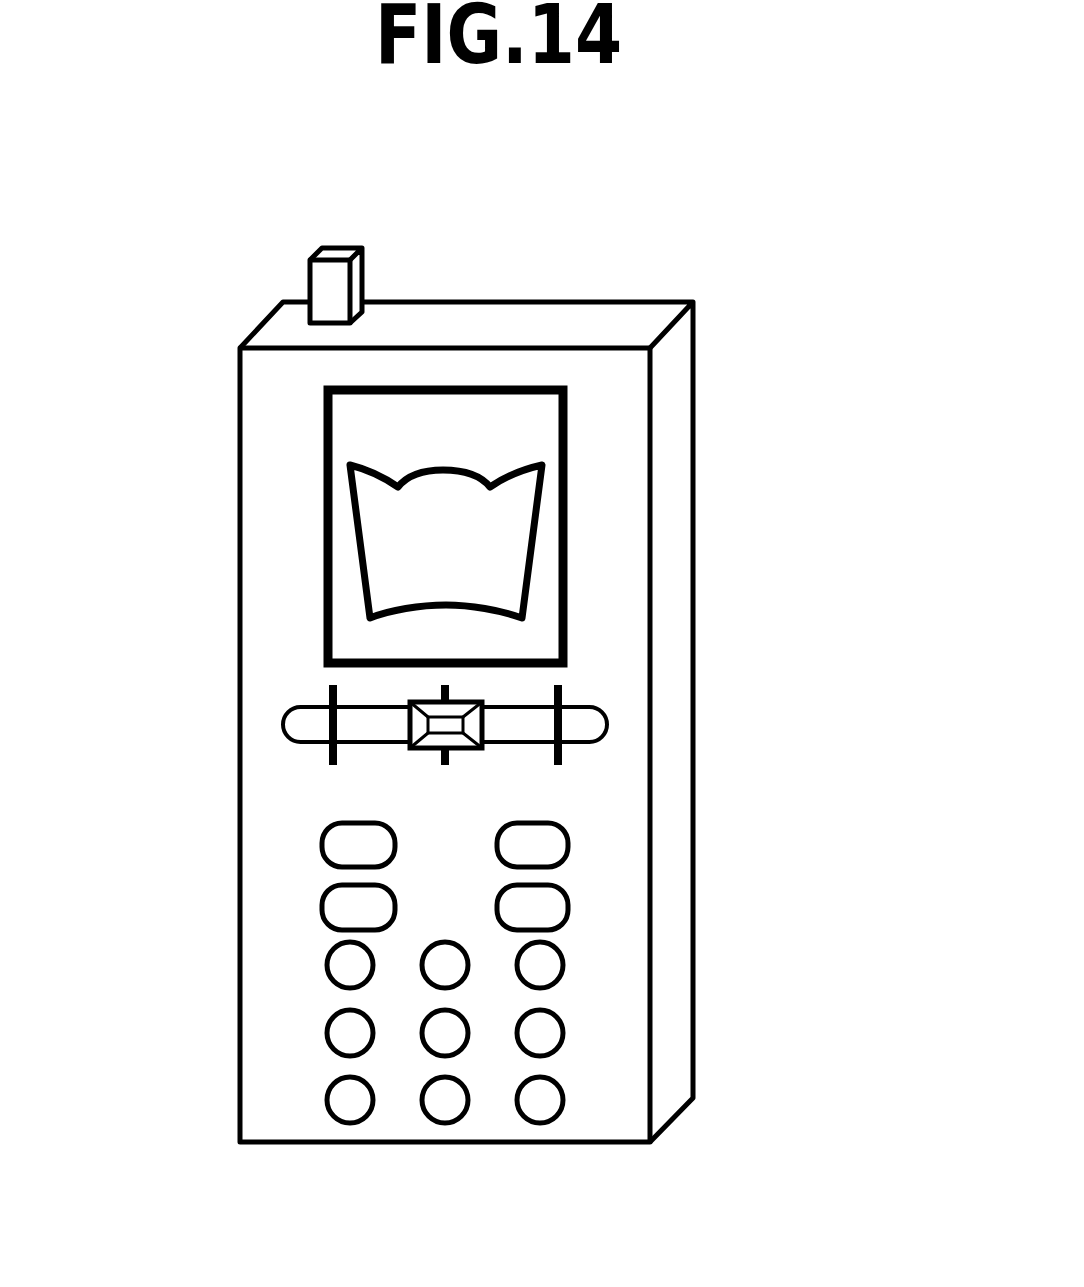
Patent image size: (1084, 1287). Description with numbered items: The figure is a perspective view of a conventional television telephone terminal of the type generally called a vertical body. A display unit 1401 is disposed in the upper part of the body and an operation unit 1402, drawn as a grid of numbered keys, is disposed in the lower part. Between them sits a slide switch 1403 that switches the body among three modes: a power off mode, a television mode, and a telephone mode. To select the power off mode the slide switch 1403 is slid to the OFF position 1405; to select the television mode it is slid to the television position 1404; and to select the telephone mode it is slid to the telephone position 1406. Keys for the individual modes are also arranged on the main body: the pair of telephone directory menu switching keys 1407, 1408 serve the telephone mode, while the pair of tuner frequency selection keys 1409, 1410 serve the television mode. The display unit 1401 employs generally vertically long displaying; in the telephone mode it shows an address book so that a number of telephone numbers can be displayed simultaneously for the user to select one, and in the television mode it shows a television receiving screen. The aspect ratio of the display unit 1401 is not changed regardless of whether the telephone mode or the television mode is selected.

The display unit 1401 is at (567, 513).
The operation unit 1402 is at (578, 942).
The slide switch 1403 is at (607, 724).
The television position 1404 is at (597, 770).
The OFF position 1405 is at (440, 803).
The telephone position 1406 is at (305, 773).
The telephone directory menu switching key 1407 is at (337, 848).
The telephone directory menu switching key 1408 is at (552, 848).
The tuner frequency selection key 1409 is at (337, 910).
The tuner frequency selection key 1410 is at (552, 910).